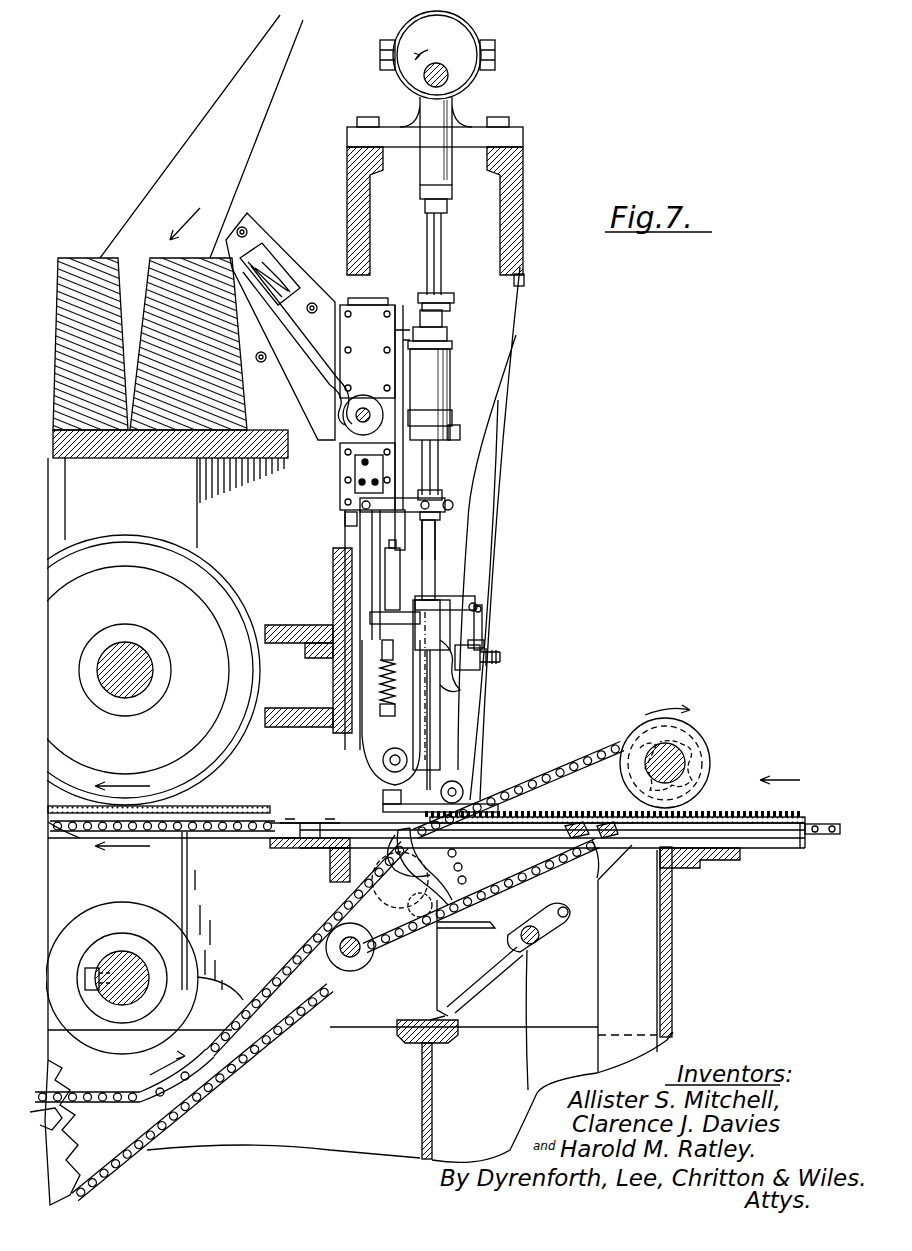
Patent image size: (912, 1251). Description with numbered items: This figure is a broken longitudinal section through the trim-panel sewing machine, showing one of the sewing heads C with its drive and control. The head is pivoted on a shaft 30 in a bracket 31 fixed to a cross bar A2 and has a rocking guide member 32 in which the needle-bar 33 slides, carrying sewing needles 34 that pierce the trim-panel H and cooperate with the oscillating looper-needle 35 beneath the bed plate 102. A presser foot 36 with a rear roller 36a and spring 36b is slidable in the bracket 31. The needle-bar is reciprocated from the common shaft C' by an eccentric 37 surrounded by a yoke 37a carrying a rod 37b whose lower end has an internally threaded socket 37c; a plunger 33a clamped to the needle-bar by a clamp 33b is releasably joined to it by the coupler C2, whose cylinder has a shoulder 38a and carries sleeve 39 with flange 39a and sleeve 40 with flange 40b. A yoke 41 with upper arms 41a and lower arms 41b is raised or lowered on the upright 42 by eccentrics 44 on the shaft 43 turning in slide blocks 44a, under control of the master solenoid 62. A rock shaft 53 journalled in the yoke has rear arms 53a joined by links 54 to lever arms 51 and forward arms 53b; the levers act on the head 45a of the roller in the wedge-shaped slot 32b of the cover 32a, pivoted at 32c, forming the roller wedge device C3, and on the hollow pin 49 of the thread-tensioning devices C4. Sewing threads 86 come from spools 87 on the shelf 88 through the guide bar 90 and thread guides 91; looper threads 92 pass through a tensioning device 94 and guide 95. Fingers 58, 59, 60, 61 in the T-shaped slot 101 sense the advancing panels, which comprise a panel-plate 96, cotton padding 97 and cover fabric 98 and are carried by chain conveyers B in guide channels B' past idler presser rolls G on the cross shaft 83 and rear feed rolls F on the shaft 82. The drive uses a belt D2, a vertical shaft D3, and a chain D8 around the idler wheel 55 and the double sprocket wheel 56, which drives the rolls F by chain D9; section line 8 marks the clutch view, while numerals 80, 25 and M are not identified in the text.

The eccentric 37 is at (415, 35).
The common shaft C' is at (462, 83).
The yoke 37a is at (448, 170).
The rod 37b is at (441, 240).
The internally threaded socket 37c is at (423, 290).
The yoke 41 is at (372, 305).
The upper arms 41a is at (450, 300).
The guide bar 90 is at (528, 280).
The threads 86 is at (262, 128).
The spools 87 is at (155, 262).
The section line 8 is at (185, 216).
The shelf 88 is at (135, 460).
The master solenoid 62 is at (270, 262).
The connecting rod 80 is at (310, 345).
The eccentric shaft 43 is at (338, 402).
The flange 40b is at (405, 346).
The slide blocks 44a is at (365, 395).
The eccentrics 44 is at (338, 450).
The flange member 39a is at (440, 330).
The sleeve 39 is at (443, 345).
The sleeve member 40 is at (450, 385).
The coupler C2 is at (445, 375).
The shoulder 38a is at (460, 432).
The upright 42 is at (435, 450).
The plunger 33a is at (445, 482).
The lower arms 41b is at (450, 505).
The rearwardly extending arms 53a is at (348, 512).
The forwardly extending arms 53b is at (442, 520).
The rock shaft 53 is at (400, 510).
The clamp 33b is at (440, 545).
The links 54 is at (348, 542).
The needle-bar 33 is at (436, 570).
The cross bars A2 is at (333, 576).
The pivotal connection 32c is at (482, 592).
The wedge-shaped slot 32b is at (430, 645).
The sewing heads C is at (516, 593).
The cover like member 32a is at (450, 614).
The thread guides 91 is at (484, 630).
The roller wedge device C3 is at (486, 642).
The hollow pin 49 is at (502, 657).
The thread-tensioning devices C4 is at (486, 664).
The head 45a is at (462, 682).
The lever arms 51 is at (338, 648).
The spring 36b is at (380, 690).
The idler presser rolls G is at (162, 558).
The cross shaft 83 is at (150, 670).
The rocking guide member 32 is at (445, 712).
The bracket 31 is at (375, 735).
The sewing needles 34 is at (432, 775).
The shaft 30 is at (383, 763).
The presser foot 36 is at (383, 798).
The roller 36a is at (461, 789).
The panel-plate 96 is at (383, 809).
The rail strip 25 is at (250, 812).
The endless chain conveyers B is at (161, 812).
The cotton padding 97 is at (582, 812).
The cover fabric 98 is at (700, 818).
The trim-panels H is at (702, 830).
The guide channels B' is at (822, 802).
The T-shaped slot 101 is at (740, 850).
The finger 61 is at (290, 848).
The finger 60 is at (322, 848).
The bed plate 102 is at (335, 862).
The finger 59 is at (574, 840).
The finger 58 is at (603, 840).
The rear feed rollers F is at (690, 738).
The shaft 82 is at (684, 760).
The sprocket chain D9 is at (560, 770).
The belt D2 is at (110, 958).
The vertical shaft D3 is at (358, 934).
The double sprocket wheel 56 is at (516, 878).
The sprocket chain D8 is at (280, 1037).
The lower idler wheel 55 is at (70, 1118).
The looper-needle 35 is at (466, 862).
The guide 95 is at (470, 928).
The tensioning device 94 is at (563, 918).
The looper-needle threads 92 is at (528, 990).
The pedestal M is at (432, 1102).